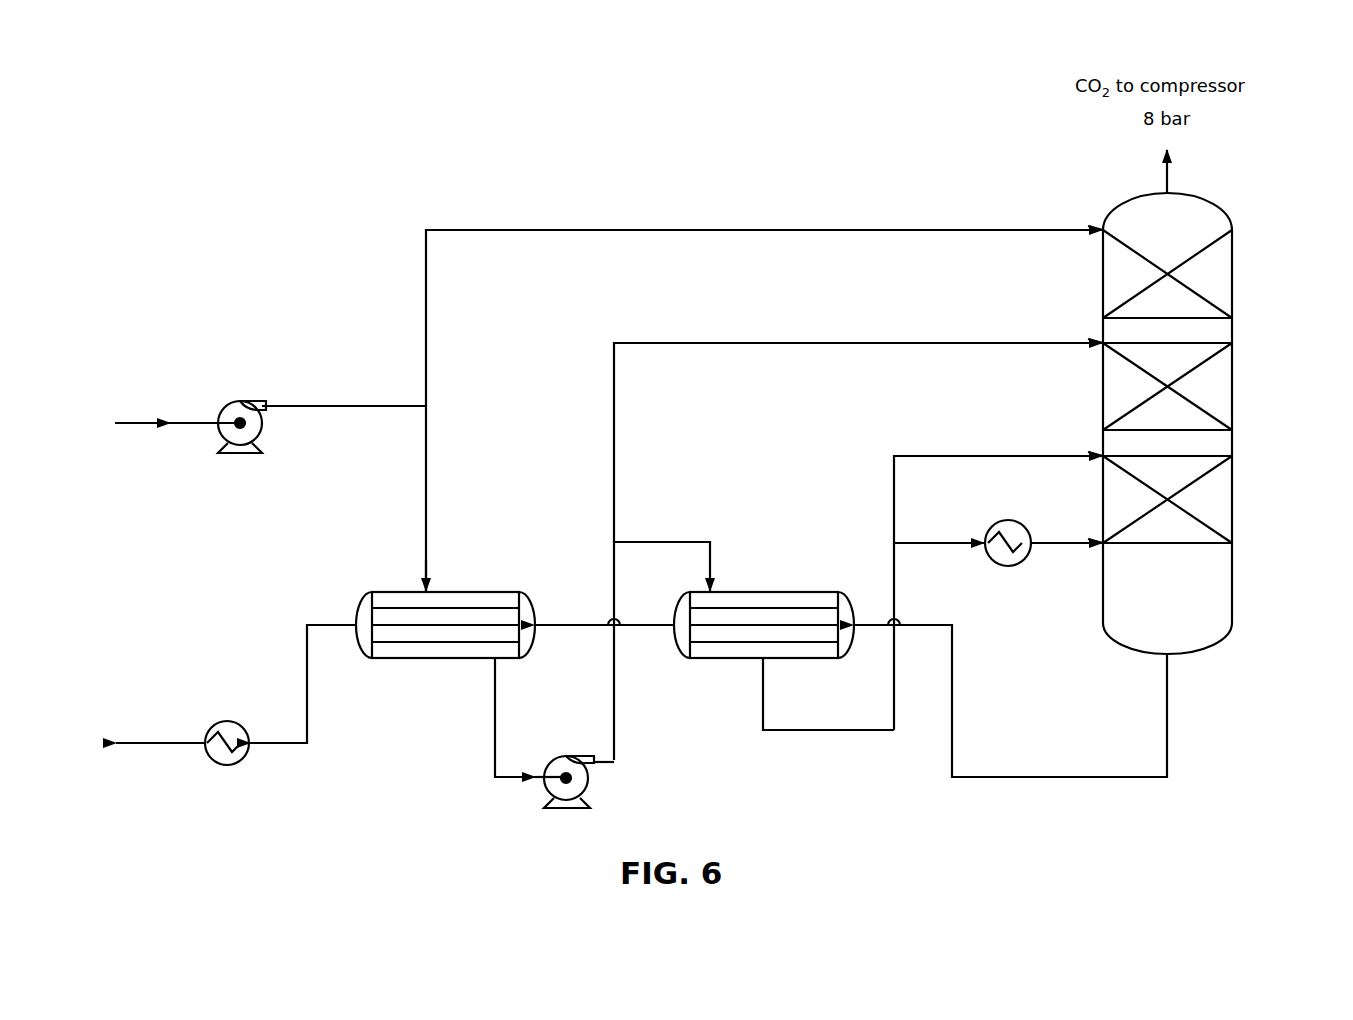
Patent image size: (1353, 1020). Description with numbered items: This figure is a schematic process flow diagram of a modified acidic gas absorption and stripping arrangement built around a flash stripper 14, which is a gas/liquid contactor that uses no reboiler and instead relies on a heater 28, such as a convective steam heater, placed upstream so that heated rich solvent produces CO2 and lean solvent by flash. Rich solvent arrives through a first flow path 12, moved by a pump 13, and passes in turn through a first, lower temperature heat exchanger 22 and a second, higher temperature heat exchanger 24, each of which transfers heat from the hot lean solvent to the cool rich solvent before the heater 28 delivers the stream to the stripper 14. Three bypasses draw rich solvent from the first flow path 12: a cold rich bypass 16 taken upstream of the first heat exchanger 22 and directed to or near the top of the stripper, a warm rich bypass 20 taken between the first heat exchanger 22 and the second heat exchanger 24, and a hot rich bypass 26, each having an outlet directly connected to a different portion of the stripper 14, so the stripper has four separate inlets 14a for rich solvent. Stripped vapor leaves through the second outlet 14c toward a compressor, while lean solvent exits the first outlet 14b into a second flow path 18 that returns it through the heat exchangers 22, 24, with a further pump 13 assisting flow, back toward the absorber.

The first flow path 12 is at (376, 406).
The pump 13 is at (262, 426).
The flash stripper 14 is at (1232, 215).
The inlet 14a is at (1103, 228).
The first outlet 14b is at (1170, 660).
The second outlet 14c is at (1170, 193).
The cold rich solvent bypass 16 is at (731, 230).
The second flow path 18 is at (1168, 740).
The warm rich solvent bypass 20 is at (1003, 343).
The first heat exchanger 22 is at (360, 598).
The second heat exchanger 24 is at (785, 660).
The hot rich bypass 26 is at (960, 460).
The heater 28 is at (1008, 520).